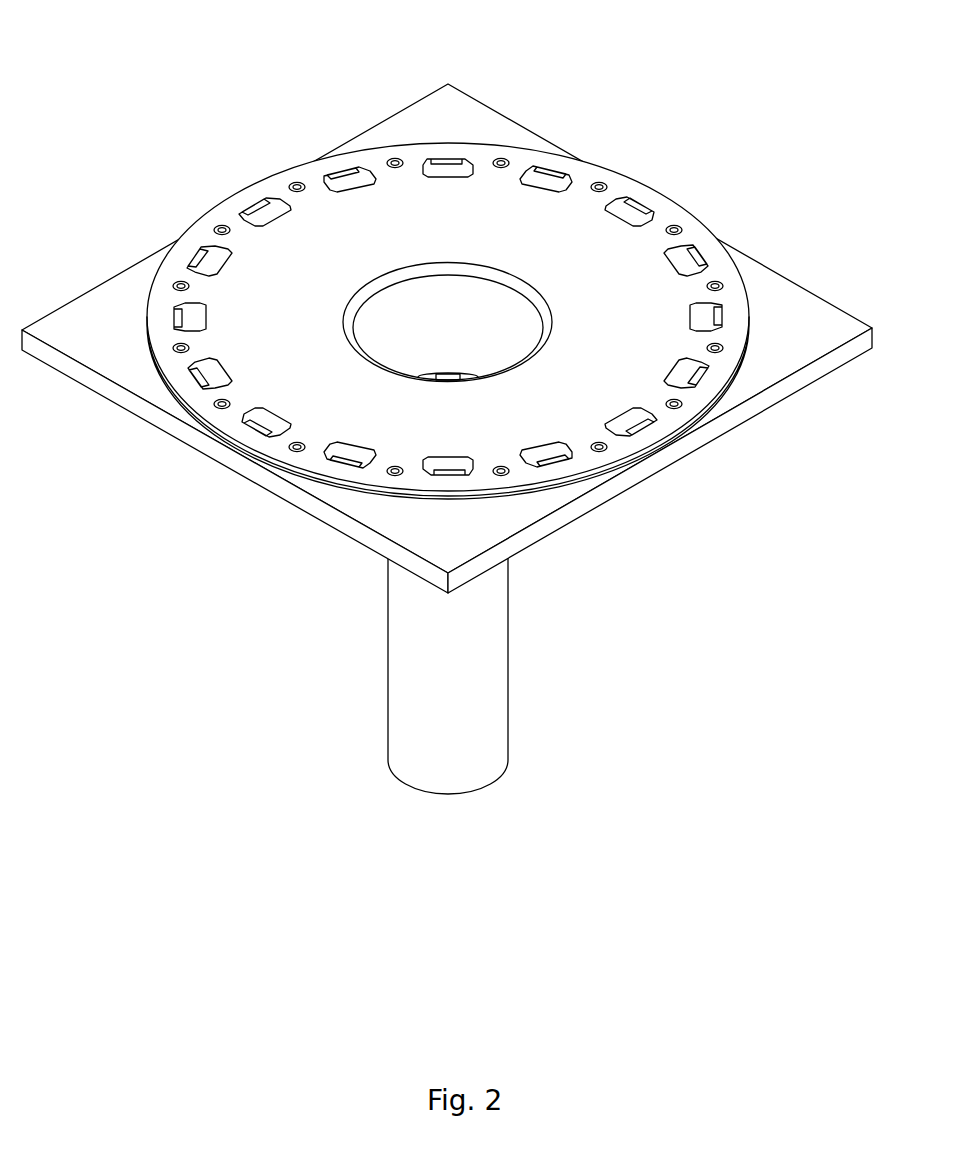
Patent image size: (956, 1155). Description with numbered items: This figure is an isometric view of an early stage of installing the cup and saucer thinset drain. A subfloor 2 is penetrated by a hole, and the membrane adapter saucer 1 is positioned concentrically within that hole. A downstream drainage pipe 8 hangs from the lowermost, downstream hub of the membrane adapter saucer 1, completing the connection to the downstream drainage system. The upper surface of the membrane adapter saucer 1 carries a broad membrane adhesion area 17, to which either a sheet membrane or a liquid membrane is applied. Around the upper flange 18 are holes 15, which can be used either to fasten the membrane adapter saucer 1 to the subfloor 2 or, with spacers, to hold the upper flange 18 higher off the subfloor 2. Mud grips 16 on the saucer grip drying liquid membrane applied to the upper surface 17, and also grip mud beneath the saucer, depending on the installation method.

The membrane adapter saucer 1 is at (559, 275).
The subfloor 2 is at (800, 416).
The downstream drainage pipe 8 is at (480, 657).
The holes 15 is at (534, 150).
The mud grips 16 is at (584, 175).
The membrane adhesion area 17 is at (417, 218).
The upper flange 18 is at (213, 341).